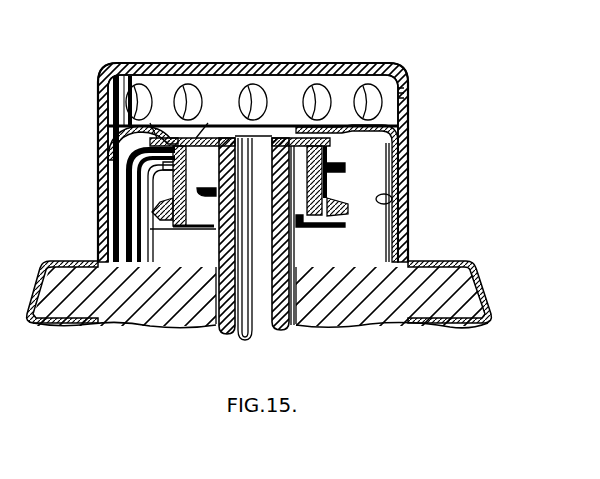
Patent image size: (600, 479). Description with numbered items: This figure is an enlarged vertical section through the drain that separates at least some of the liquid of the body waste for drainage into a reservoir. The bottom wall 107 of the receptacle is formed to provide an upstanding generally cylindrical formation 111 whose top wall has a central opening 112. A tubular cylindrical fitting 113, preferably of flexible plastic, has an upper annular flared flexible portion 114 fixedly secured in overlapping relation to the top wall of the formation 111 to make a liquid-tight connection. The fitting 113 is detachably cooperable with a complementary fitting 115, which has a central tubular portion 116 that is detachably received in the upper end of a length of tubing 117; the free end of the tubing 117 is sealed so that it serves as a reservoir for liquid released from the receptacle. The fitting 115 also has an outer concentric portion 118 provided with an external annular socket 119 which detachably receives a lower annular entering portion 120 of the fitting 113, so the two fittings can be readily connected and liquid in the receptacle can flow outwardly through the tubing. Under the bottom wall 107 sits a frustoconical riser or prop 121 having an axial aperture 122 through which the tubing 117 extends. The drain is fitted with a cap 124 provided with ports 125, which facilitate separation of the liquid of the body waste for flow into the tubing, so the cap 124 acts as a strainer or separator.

The bottom wall 107 is at (442, 260).
The upstanding generally cylindrical formation 111 is at (392, 203).
The central opening 112 is at (352, 136).
The tubular cylindrical fitting 113 is at (117, 153).
The upper annular flared flexible portion 114 is at (108, 136).
The complementary fitting 115 is at (218, 147).
The central tubular portion 116 is at (268, 163).
The tubing 117 is at (262, 320).
The outer concentric portion 118 is at (173, 181).
The external annular socket 119 is at (173, 229).
The lower annular entering portion 120 is at (160, 219).
The riser 121 is at (466, 296).
The axial aperture 122 is at (303, 308).
The cap 124 is at (404, 72).
The ports 125 is at (173, 67).